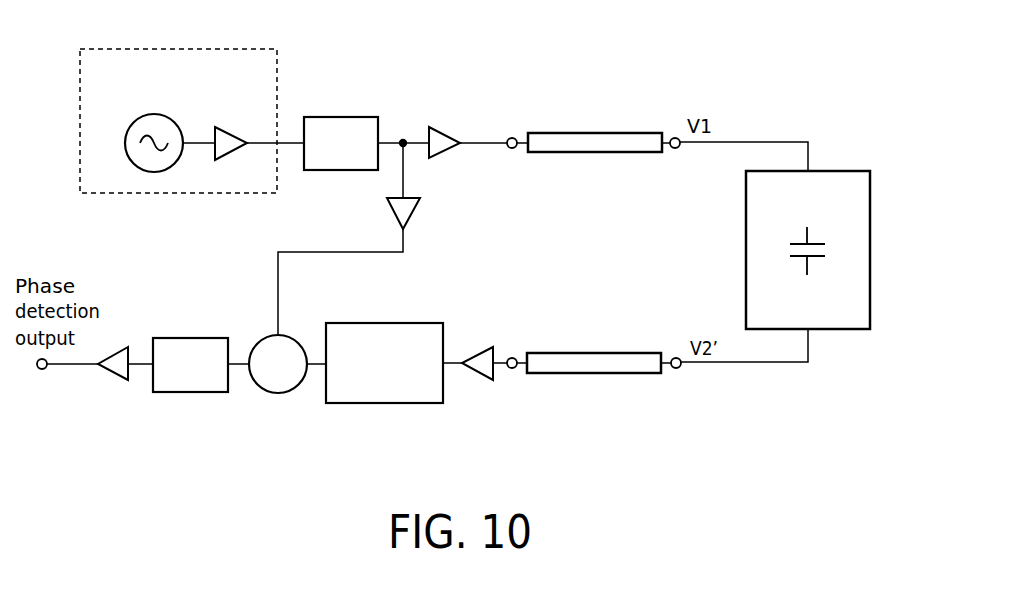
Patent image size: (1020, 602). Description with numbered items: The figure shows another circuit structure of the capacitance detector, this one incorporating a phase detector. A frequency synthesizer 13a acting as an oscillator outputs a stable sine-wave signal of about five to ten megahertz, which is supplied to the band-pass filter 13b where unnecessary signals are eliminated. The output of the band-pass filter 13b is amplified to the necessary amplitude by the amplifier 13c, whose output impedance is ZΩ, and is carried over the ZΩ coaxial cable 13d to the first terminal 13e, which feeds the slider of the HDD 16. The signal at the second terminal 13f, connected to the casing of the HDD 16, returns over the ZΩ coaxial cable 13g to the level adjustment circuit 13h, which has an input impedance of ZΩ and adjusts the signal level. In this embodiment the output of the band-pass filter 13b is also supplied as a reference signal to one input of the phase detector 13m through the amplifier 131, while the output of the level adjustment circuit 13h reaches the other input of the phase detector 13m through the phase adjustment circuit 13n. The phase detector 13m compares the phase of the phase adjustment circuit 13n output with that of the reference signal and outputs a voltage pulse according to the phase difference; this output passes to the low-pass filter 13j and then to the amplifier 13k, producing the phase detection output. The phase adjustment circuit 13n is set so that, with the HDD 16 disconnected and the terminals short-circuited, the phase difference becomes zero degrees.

The frequency synthesizer 13a is at (180, 48).
The band-pass filter 13b is at (345, 117).
The amplifier 13c is at (443, 127).
The coaxial cable 13d is at (545, 133).
The first terminal 13e is at (677, 149).
The second terminal 13f is at (678, 369).
The coaxial cable 13g is at (544, 353).
The level adjustment circuit 13h is at (475, 348).
The low-pass filter 13j is at (193, 338).
The amplifier 13k is at (112, 381).
The phase detector 13m is at (283, 394).
The phase adjustment circuit 13n is at (371, 323).
The amplifier 131 is at (414, 209).
The HDD 16 is at (842, 171).